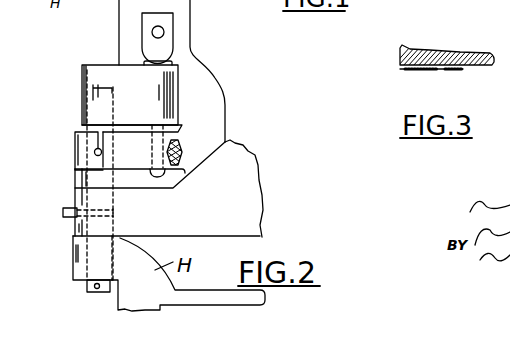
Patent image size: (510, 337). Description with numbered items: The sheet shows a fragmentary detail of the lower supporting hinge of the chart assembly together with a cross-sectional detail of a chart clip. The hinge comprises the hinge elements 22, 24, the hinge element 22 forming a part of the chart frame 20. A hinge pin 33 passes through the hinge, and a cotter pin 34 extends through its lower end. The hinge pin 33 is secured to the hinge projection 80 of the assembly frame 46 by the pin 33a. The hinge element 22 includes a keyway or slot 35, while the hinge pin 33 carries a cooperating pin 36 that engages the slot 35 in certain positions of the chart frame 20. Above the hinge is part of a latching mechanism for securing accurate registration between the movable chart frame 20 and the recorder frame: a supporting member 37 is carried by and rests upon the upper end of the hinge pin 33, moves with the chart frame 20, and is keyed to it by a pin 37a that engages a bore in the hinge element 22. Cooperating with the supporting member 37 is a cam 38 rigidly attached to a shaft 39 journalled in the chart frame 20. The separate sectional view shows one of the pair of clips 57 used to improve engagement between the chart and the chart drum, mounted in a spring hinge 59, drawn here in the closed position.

In FIG. 2, the chart frame 20 is at (127, 32).
In FIG. 3, the chart frame 20 is at (440, 50).
In FIG. 2, the hinge element 22 is at (77, 150).
In FIG. 2, the hinge element 24 is at (72, 253).
In FIG. 2, the hinge pin 33 is at (97, 292).
In FIG. 2, the pin 33a is at (65, 213).
In FIG. 2, the cotter pin 34 is at (94, 286).
In FIG. 2, the keyway or slot 35 is at (80, 133).
In FIG. 2, the cooperating pin 36 is at (97, 155).
In FIG. 2, the supporting member 37 is at (88, 78).
In FIG. 2, the pin 37a is at (158, 177).
In FIG. 2, the cam 38 is at (173, 18).
In FIG. 2, the shaft 39 is at (164, 32).
In FIG. 2, the assembly frame 46 is at (235, 158).
In FIG. 3, the clip 57 is at (453, 72).
In FIG. 3, the spring hinge 59 is at (423, 70).
In FIG. 2, the hinge projection 80 is at (78, 228).